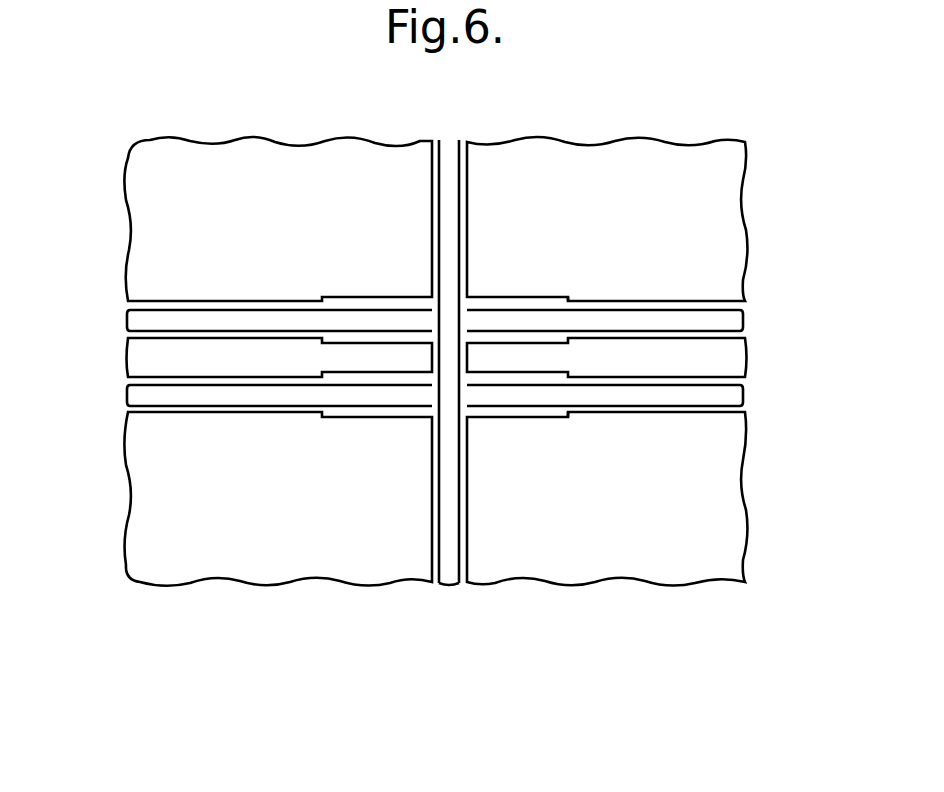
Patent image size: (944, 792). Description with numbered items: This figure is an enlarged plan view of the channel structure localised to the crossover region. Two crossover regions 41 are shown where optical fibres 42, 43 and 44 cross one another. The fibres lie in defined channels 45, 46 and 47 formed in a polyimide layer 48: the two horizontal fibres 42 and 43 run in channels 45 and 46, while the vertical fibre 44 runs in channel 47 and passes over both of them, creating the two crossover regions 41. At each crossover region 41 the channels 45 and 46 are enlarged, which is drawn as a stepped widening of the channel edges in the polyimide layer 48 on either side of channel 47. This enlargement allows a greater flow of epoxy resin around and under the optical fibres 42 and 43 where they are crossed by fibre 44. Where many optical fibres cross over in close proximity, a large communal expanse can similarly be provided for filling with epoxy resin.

The crossover region 41 is at (548, 300).
The optical fibre 42 is at (128, 322).
The optical fibre 43 is at (128, 394).
The optical fibre 44 is at (450, 142).
The channel 45 is at (752, 323).
The channel 46 is at (752, 395).
The channel 47 is at (451, 596).
The polyimide layer 48 is at (687, 157).